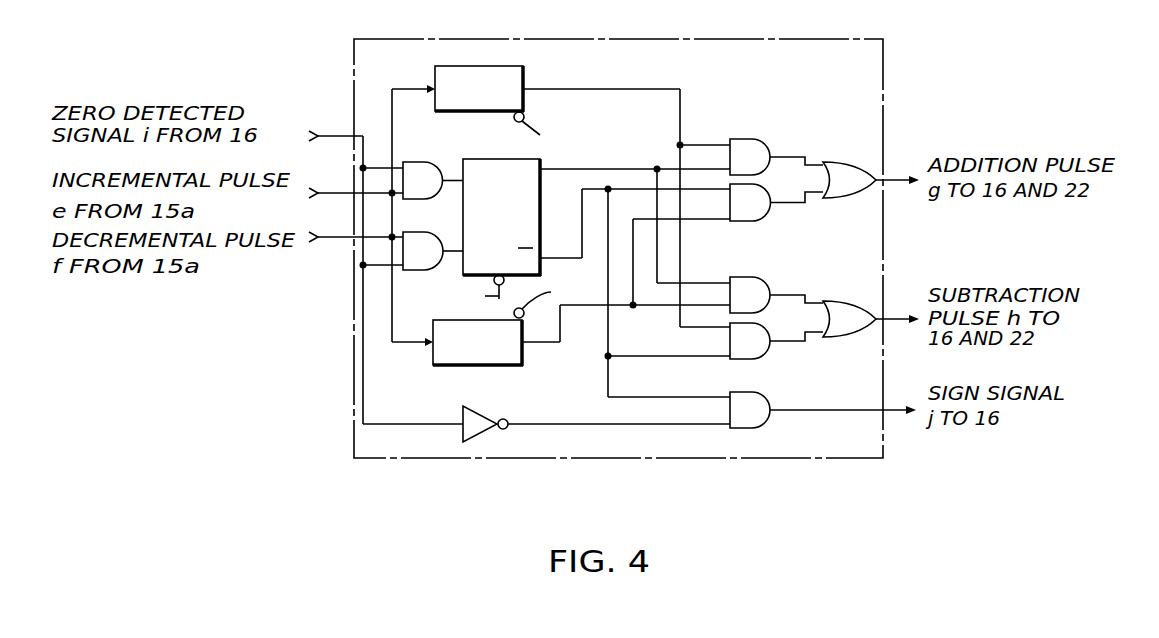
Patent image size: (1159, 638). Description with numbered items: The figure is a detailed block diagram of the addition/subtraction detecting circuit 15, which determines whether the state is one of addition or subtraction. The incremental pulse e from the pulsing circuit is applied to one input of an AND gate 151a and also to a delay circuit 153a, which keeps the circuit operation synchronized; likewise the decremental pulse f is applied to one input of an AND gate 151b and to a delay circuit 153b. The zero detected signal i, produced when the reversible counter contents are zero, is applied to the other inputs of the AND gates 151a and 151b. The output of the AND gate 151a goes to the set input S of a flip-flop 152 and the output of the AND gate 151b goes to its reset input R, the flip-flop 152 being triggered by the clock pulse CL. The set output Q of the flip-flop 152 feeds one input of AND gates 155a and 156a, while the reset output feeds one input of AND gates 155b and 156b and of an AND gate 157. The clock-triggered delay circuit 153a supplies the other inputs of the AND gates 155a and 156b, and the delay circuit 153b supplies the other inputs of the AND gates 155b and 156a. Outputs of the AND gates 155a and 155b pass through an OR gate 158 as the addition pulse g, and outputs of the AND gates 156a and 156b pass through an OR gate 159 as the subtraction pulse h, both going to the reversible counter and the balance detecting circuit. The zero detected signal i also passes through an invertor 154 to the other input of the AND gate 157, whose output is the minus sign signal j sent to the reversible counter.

The addition/subtraction detecting circuit 15 is at (403, 443).
The AND gate 151a is at (418, 167).
The AND gate 151b is at (418, 271).
The flip-flop 152 is at (474, 160).
The delay circuit 153a is at (433, 72).
The delay circuit 153b is at (439, 360).
The invertor 154 is at (489, 415).
The AND gate 155a is at (745, 142).
The AND gate 155b is at (770, 215).
The AND gate 156a is at (760, 279).
The AND gate 156b is at (770, 354).
The AND gate 157 is at (766, 396).
The OR gate 158 is at (840, 162).
The OR gate 159 is at (843, 301).